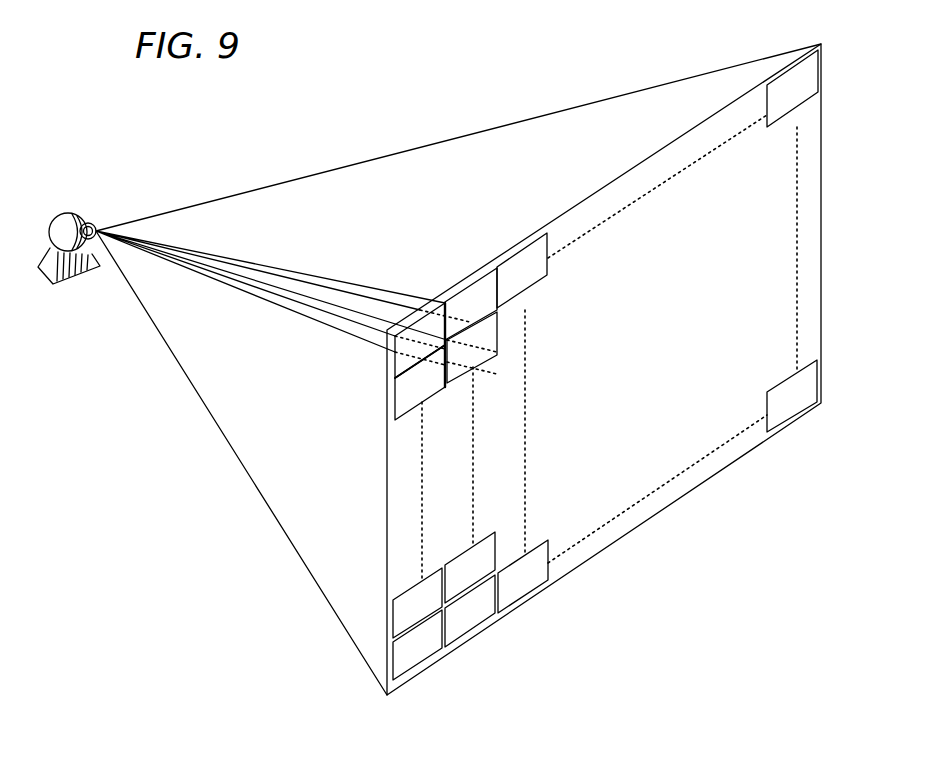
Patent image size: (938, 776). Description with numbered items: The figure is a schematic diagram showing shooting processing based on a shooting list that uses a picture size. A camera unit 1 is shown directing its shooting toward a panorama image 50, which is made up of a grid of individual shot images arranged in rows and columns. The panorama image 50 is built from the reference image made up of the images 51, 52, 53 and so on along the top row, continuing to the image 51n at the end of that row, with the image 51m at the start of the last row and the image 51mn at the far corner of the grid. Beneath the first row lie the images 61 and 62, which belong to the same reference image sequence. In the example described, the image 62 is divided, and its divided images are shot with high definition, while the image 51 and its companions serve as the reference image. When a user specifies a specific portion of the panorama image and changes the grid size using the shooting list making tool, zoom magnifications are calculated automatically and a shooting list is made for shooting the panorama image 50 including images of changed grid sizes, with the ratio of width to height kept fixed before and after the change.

The projector 1 is at (68, 212).
The panorama image 50 is at (633, 531).
The image 51 is at (428, 305).
The image 52 is at (468, 292).
The image 53 is at (525, 265).
The image 51m is at (415, 652).
The image 51n is at (803, 70).
The image 51mn is at (795, 400).
The image 61 is at (402, 383).
The image 62 is at (452, 385).